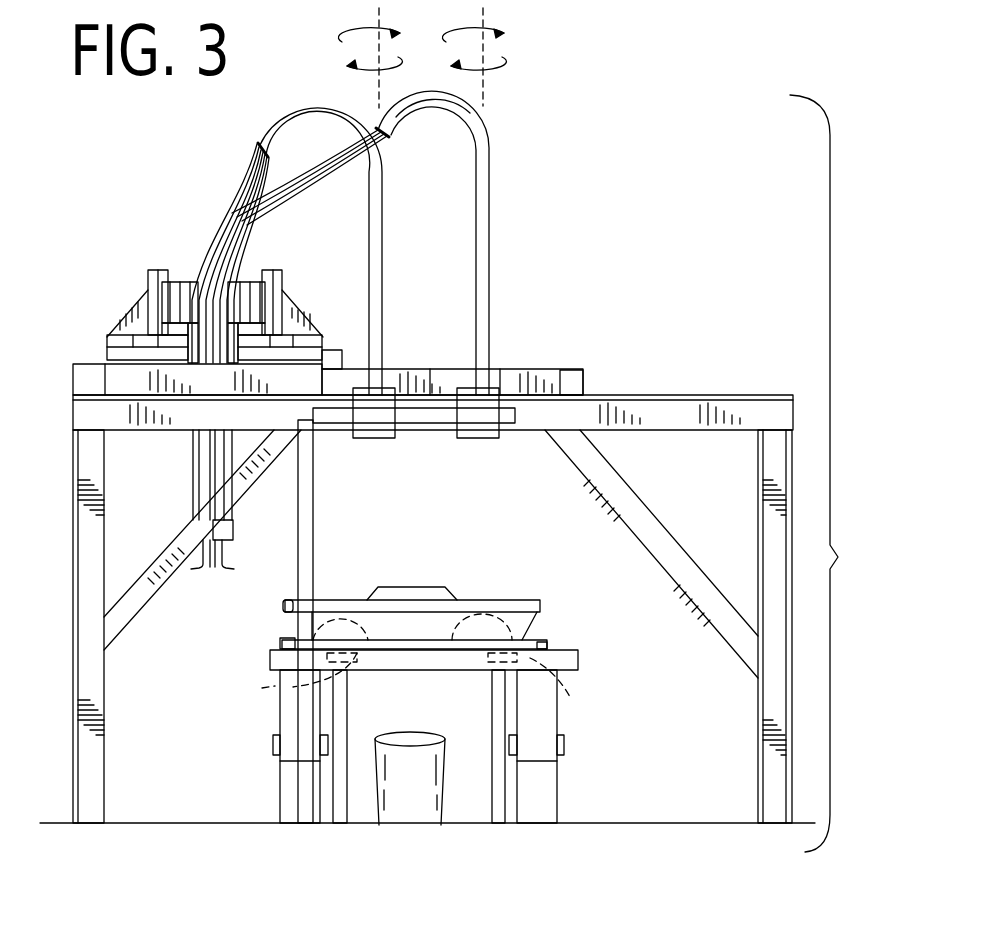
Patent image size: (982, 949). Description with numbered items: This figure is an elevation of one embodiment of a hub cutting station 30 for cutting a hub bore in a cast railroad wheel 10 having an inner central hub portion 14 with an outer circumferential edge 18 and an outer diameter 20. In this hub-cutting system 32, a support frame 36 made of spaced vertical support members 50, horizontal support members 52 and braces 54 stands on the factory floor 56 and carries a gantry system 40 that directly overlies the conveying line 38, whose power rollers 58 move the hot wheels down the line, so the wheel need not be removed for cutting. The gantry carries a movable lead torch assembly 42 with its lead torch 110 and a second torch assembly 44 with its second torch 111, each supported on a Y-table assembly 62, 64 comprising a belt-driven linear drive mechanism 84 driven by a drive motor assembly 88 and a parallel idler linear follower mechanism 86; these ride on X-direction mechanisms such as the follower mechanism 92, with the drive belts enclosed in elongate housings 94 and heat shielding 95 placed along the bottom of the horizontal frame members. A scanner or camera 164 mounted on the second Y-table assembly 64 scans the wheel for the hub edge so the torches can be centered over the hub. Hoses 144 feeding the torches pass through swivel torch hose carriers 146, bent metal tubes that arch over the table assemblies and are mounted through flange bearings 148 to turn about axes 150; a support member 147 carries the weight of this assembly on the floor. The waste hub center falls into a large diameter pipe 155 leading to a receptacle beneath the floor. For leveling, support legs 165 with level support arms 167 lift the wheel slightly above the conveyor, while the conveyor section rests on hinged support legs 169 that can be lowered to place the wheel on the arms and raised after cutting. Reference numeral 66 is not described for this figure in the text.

The railroad wheel 10 is at (530, 628).
The inner central hub portion 14 is at (392, 592).
The outer circumferential edge 18 is at (450, 600).
The outer diameter 20 is at (533, 608).
The hub cutting station 30 is at (836, 473).
The hub-cutting system 32 is at (607, 400).
The support frame 36 is at (775, 455).
The conveying line 38 is at (558, 660).
The gantry system 40 is at (537, 388).
The lead torch assembly 42 is at (133, 302).
The second torch assembly 44 is at (298, 301).
The vertical support members 50 is at (88, 693).
The horizontal support members 52 is at (687, 413).
The braces 54 is at (122, 612).
The factory floor 56 is at (157, 822).
The power rollers 58 is at (350, 643).
The Y-table assembly 62 is at (120, 347).
The second Y-table assembly 64 is at (293, 330).
The mounting region 66 is at (443, 380).
The linear drive mechanism 84 is at (110, 350).
The linear follower mechanism 86 is at (250, 350).
The drive motor assembly 88 is at (88, 380).
The X-direction linear follower mechanism 92 is at (502, 377).
The elongate housing 94 is at (573, 380).
The heat shielding 95 is at (327, 437).
The lead torch 110 is at (207, 570).
The second torch 111 is at (220, 580).
The hoses 144 is at (293, 180).
The swivel torch hose carrier 146 is at (477, 200).
The support member 147 is at (307, 550).
The flange bearings 148 is at (477, 430).
The axes 150 is at (395, 28).
The large diameter pipe 155 is at (447, 760).
The scanner or camera 164 is at (335, 360).
The support legs 165 is at (330, 800).
The level support arms 167 is at (575, 700).
The hinged support legs 169 is at (277, 780).